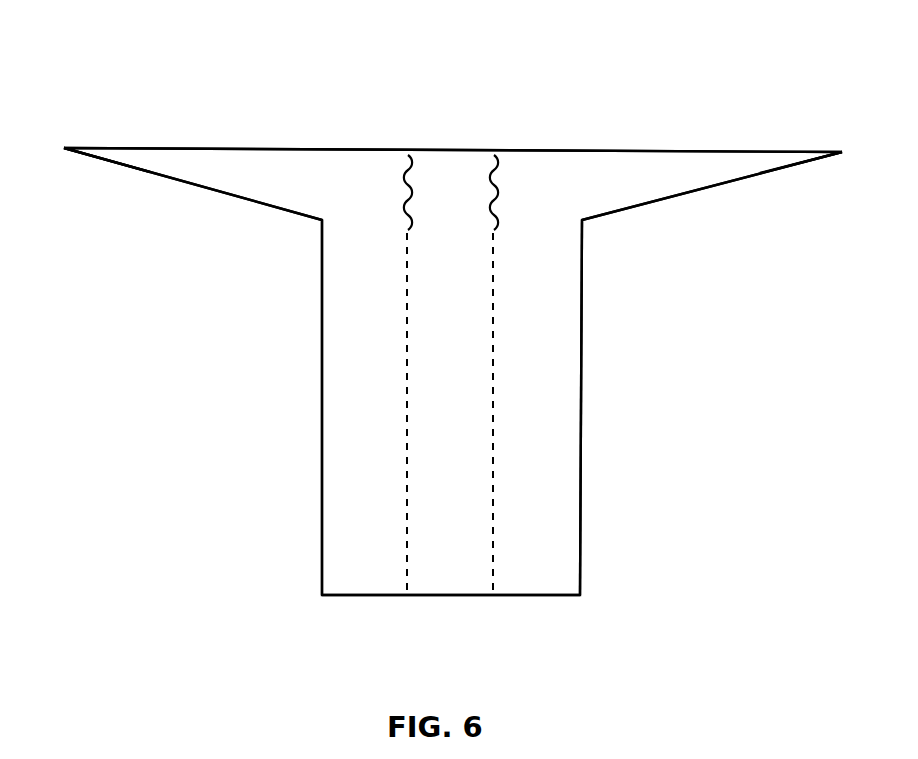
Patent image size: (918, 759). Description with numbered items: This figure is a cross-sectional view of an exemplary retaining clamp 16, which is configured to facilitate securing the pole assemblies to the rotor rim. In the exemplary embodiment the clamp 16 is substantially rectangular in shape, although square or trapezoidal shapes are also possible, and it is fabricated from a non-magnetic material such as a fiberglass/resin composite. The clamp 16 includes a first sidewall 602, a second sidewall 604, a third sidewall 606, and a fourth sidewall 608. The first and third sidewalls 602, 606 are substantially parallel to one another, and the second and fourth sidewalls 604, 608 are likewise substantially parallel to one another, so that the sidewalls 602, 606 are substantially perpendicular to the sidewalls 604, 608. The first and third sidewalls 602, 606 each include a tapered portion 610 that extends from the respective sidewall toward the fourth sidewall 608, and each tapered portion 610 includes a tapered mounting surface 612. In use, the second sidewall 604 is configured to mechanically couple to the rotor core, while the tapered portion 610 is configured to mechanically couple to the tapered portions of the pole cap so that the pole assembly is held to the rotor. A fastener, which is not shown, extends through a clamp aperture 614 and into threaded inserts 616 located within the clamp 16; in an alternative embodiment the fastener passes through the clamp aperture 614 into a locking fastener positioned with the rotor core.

The retaining clamp 16 is at (100, 64).
The first sidewall 602 is at (580, 386).
The second sidewall 604 is at (530, 597).
The third sidewall 606 is at (322, 385).
The fourth sidewall 608 is at (500, 152).
The tapered portion 610 is at (120, 164).
The tapered mounting surface 612 is at (212, 189).
The clamp aperture 614 is at (446, 608).
The threaded insert 616 is at (430, 163).